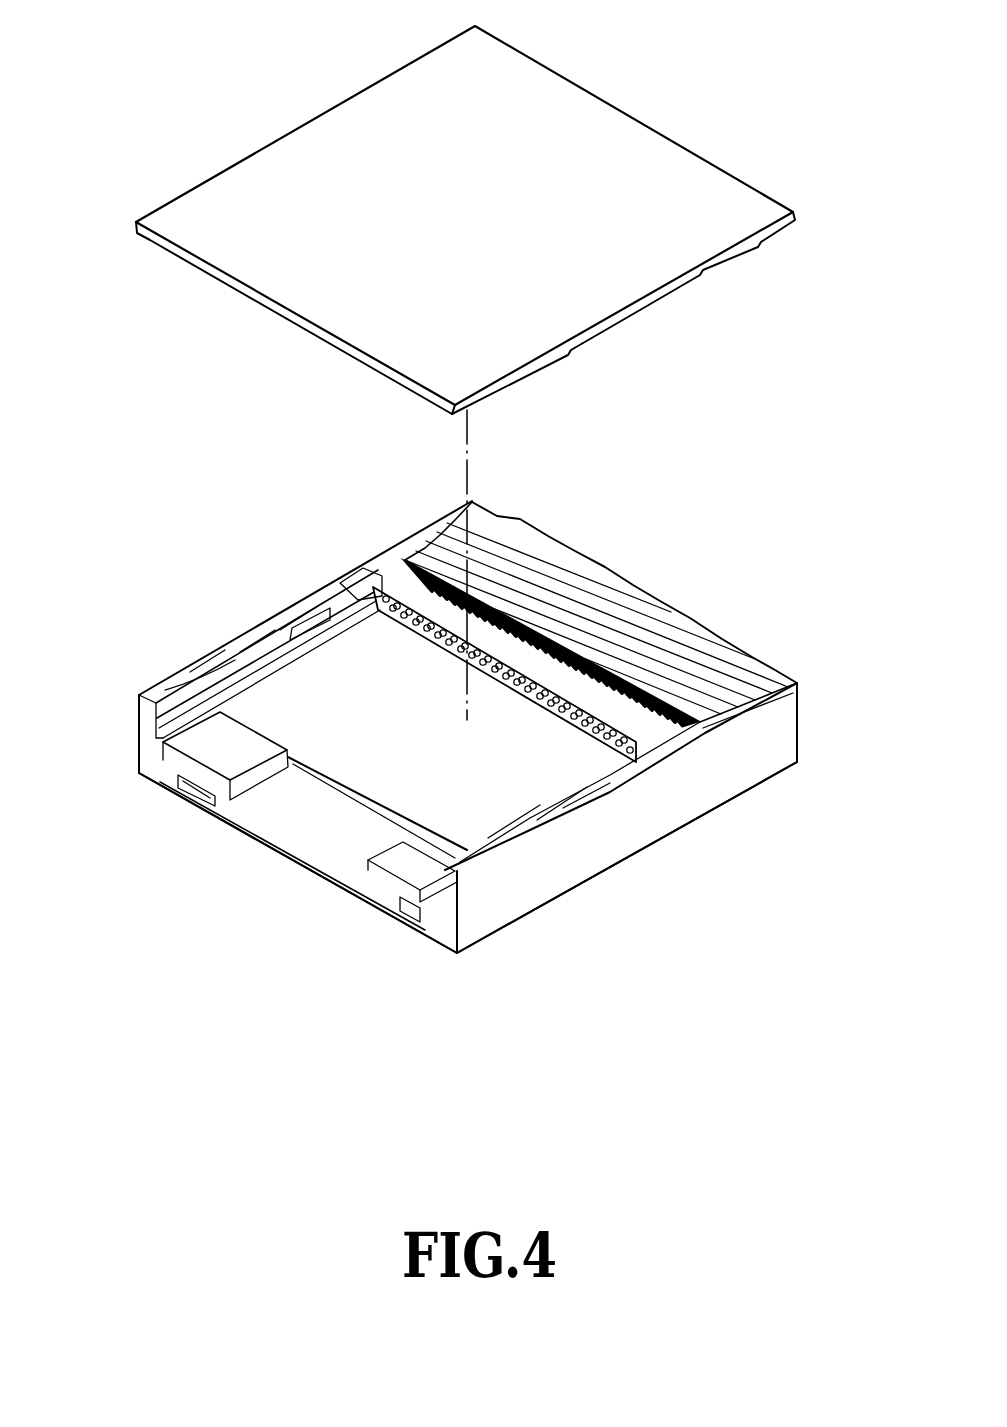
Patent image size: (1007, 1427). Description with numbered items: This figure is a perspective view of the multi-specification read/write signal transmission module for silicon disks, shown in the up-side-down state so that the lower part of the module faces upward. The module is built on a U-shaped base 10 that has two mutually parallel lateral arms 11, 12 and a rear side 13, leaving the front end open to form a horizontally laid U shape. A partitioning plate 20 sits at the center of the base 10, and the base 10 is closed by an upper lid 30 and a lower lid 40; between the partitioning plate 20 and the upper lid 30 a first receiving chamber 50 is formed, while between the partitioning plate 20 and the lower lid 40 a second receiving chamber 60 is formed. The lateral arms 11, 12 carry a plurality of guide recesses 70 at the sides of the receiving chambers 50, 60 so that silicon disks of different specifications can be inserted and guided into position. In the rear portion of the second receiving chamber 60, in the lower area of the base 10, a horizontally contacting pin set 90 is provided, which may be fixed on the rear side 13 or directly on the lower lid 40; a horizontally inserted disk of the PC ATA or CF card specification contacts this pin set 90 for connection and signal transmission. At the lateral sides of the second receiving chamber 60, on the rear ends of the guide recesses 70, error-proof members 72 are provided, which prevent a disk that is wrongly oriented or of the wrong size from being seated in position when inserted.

The base 10 is at (665, 562).
The lateral arm 11 is at (643, 813).
The lateral arm 12 is at (230, 640).
The rear side 13 is at (723, 640).
The partitioning plate 20 is at (433, 770).
The upper lid 30 is at (523, 920).
The lower lid 40 is at (392, 125).
The first receiving chamber 50 is at (302, 815).
The second receiving chamber 60 is at (309, 331).
The guide recesses 70 is at (165, 712).
The error-proof members 72 is at (363, 587).
The horizontally contacting pin set 90 is at (525, 625).